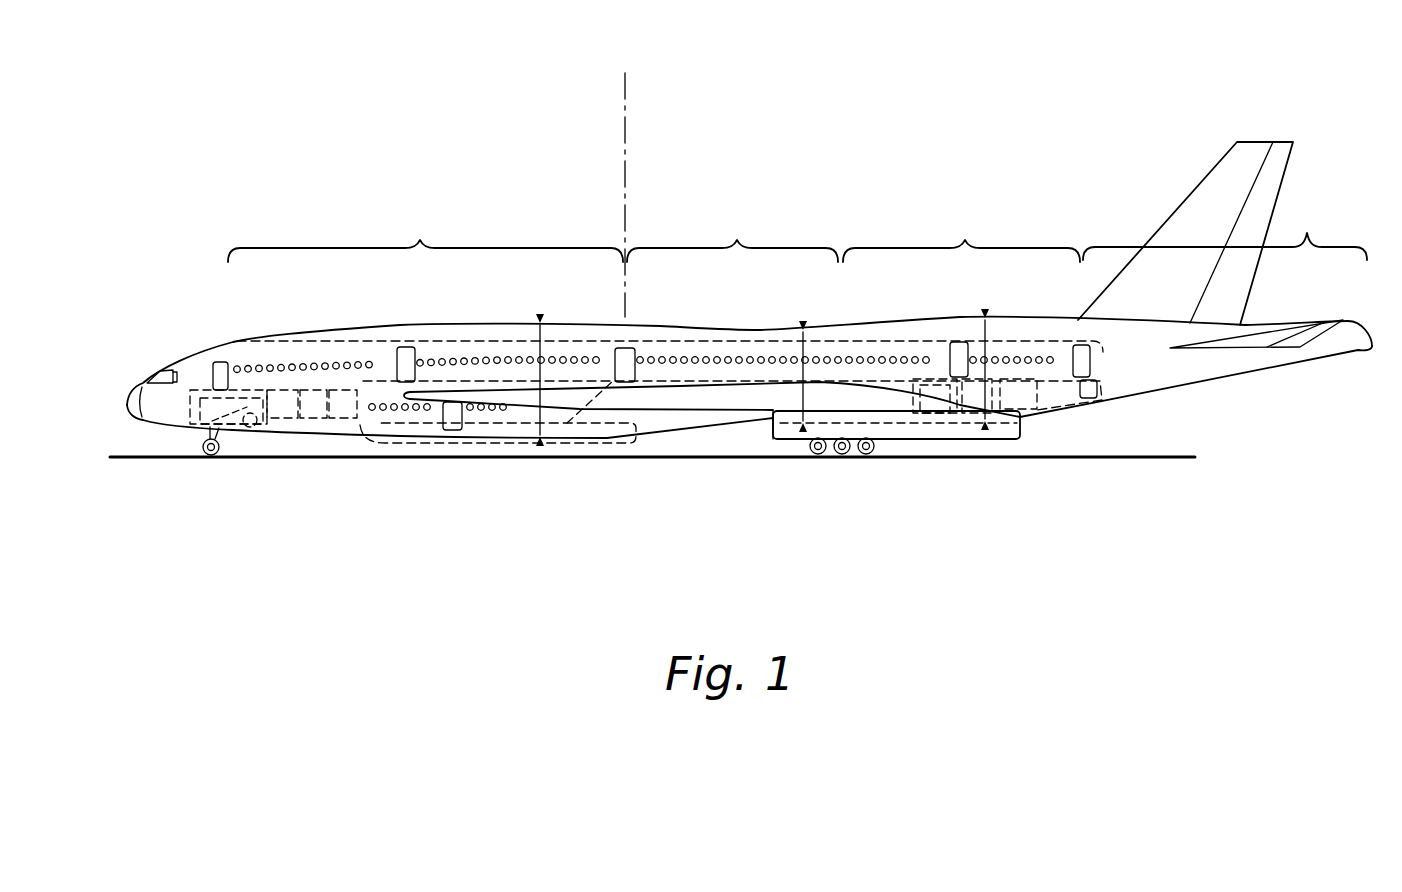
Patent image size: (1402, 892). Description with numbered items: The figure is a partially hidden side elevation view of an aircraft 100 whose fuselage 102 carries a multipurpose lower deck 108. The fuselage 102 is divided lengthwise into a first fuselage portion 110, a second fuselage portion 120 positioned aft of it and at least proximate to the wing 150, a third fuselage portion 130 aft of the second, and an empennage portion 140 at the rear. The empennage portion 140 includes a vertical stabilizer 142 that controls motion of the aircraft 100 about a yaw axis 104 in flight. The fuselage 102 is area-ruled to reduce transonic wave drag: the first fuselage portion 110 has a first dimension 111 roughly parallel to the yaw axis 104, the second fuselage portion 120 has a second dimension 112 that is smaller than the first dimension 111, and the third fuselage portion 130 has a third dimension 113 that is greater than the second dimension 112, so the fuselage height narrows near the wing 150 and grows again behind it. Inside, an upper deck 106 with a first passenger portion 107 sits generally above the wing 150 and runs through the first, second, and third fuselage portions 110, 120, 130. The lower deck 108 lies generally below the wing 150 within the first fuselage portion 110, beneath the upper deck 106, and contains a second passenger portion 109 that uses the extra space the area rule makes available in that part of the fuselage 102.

The aircraft 100 is at (226, 222).
The fuselage 102 is at (167, 366).
The yaw axis 104 is at (625, 130).
The upper deck 106 is at (266, 357).
The first passenger portion 107 is at (428, 340).
The multipurpose lower deck 108 is at (266, 403).
The second passenger portion 109 is at (455, 443).
The first fuselage portion 110 is at (420, 240).
The first dimension 111 is at (540, 345).
The second dimension 112 is at (803, 350).
The third dimension 113 is at (985, 335).
The second fuselage portion 120 is at (737, 240).
The third fuselage portion 130 is at (965, 240).
The empennage portion 140 is at (1307, 233).
The vertical stabilizer 142 is at (1193, 188).
The wing 150 is at (708, 400).